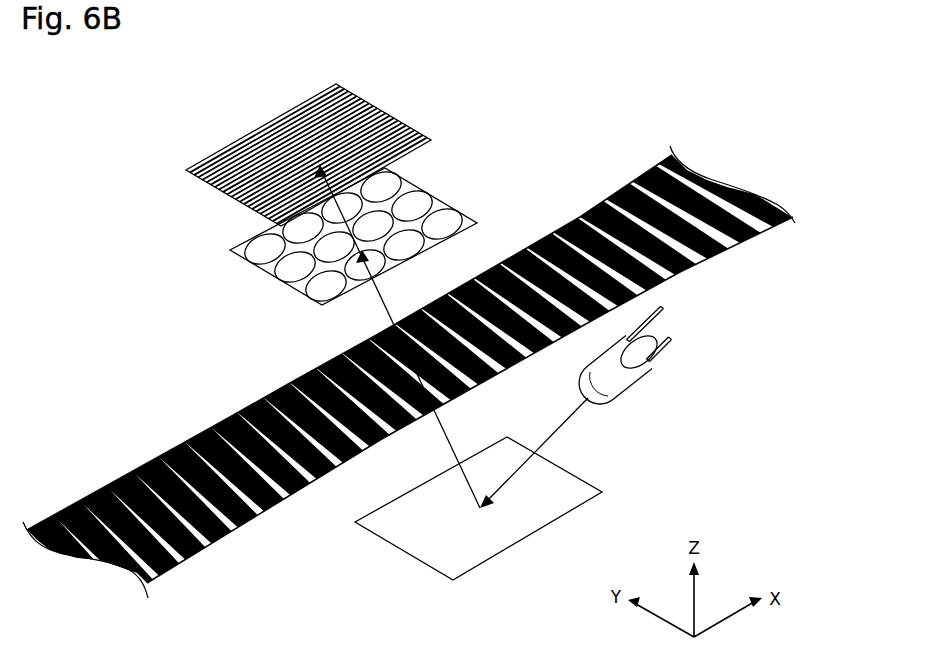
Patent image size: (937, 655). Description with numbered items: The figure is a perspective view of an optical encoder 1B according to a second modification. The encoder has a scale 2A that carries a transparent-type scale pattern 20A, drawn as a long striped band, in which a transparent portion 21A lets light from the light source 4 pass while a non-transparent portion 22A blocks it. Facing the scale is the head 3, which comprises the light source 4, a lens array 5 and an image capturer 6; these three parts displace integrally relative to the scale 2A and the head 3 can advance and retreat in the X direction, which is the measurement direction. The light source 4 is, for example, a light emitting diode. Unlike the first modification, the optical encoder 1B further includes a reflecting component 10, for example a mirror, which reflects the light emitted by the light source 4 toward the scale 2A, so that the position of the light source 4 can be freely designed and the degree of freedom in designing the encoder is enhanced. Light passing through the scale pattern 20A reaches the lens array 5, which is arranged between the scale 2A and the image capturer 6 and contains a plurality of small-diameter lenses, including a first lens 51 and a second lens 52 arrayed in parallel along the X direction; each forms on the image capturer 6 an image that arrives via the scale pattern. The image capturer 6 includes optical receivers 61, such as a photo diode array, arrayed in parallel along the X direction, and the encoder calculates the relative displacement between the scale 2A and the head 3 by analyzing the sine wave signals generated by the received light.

The optical encoder 1B is at (448, 306).
The scale 2A is at (430, 400).
The transparent-type scale pattern 20A is at (137, 470).
The transparent portion 21A is at (277, 395).
The non-transparent portion 22A is at (207, 548).
The head 3 is at (442, 239).
The light source 4 is at (652, 386).
The lens array 5 is at (385, 229).
The first lens 51 is at (385, 231).
The second lens 52 is at (345, 195).
The image capturer 6 is at (291, 140).
The optical receivers 61 is at (353, 128).
The reflecting component 10 is at (575, 507).